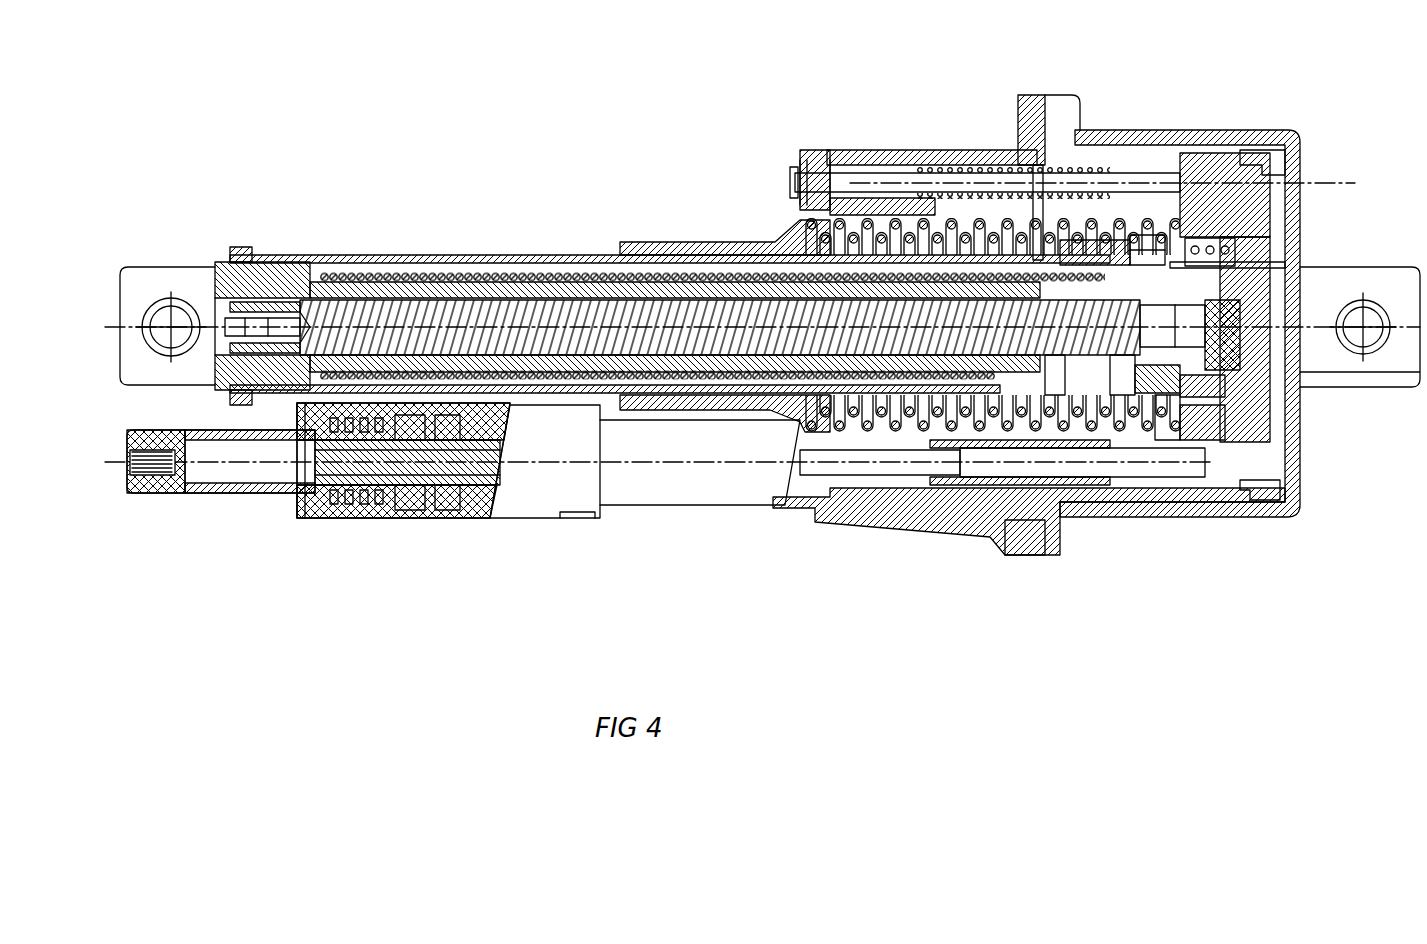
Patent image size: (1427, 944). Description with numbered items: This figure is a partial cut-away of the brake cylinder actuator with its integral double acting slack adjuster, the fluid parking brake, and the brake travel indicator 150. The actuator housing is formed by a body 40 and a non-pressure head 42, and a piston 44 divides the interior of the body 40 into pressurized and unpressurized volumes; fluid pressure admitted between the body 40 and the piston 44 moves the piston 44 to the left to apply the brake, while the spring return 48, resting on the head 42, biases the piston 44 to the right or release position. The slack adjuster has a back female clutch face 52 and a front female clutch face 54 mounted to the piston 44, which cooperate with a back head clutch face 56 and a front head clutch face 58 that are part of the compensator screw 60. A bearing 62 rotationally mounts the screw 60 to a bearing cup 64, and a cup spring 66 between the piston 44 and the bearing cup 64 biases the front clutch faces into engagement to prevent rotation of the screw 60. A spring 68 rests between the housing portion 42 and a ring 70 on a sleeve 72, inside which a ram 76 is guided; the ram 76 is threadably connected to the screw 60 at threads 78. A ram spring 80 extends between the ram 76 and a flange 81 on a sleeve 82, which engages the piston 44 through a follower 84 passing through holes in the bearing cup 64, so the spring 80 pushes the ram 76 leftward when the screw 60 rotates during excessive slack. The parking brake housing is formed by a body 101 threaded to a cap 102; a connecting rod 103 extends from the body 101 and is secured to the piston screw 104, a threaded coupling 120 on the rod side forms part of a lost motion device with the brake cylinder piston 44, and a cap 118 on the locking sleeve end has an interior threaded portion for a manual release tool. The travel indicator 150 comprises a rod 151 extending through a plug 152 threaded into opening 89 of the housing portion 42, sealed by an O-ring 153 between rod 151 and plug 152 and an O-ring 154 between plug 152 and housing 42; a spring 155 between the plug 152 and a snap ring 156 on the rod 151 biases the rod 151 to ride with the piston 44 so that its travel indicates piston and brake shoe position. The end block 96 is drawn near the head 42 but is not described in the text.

The body 40 is at (1266, 529).
The non-pressure head 42 is at (1029, 84).
The piston 44 is at (1300, 250).
The spring return 48 is at (1095, 224).
The back female clutch face 52 is at (1272, 360).
The front female clutch face 54 is at (1262, 415).
The back head clutch face 56 is at (1280, 300).
The front head clutch face 58 is at (1305, 300).
The compensator screw 60 is at (1060, 355).
The bearing 62 is at (1170, 380).
The bearing cup 64 is at (1138, 242).
The cup spring 66 is at (1240, 320).
The spring 68 is at (645, 481).
The ring 70 is at (985, 522).
The sleeve 72 is at (272, 253).
The ram 76 is at (162, 393).
The threads 78 is at (1035, 400).
The ram spring 80 is at (322, 268).
The flange 81 is at (1130, 420).
The sleeve 82 is at (1100, 380).
The follower 84 is at (1292, 185).
The threaded opening 89 is at (862, 152).
The end block 96 is at (1240, 153).
The body 101 is at (455, 505).
The cap 102 is at (300, 520).
The connecting rod 103 is at (887, 470).
The screw portion of the piston 104 is at (362, 470).
The cap 118 is at (150, 495).
The threaded coupling 120 is at (920, 478).
The brake travel indicator 150 is at (805, 108).
The rod 151 is at (975, 180).
The plug 152 is at (808, 160).
The O-ring 153 is at (815, 165).
The O-ring 154 is at (832, 158).
The spring 155 is at (1115, 178).
The snap ring 156 is at (1195, 165).